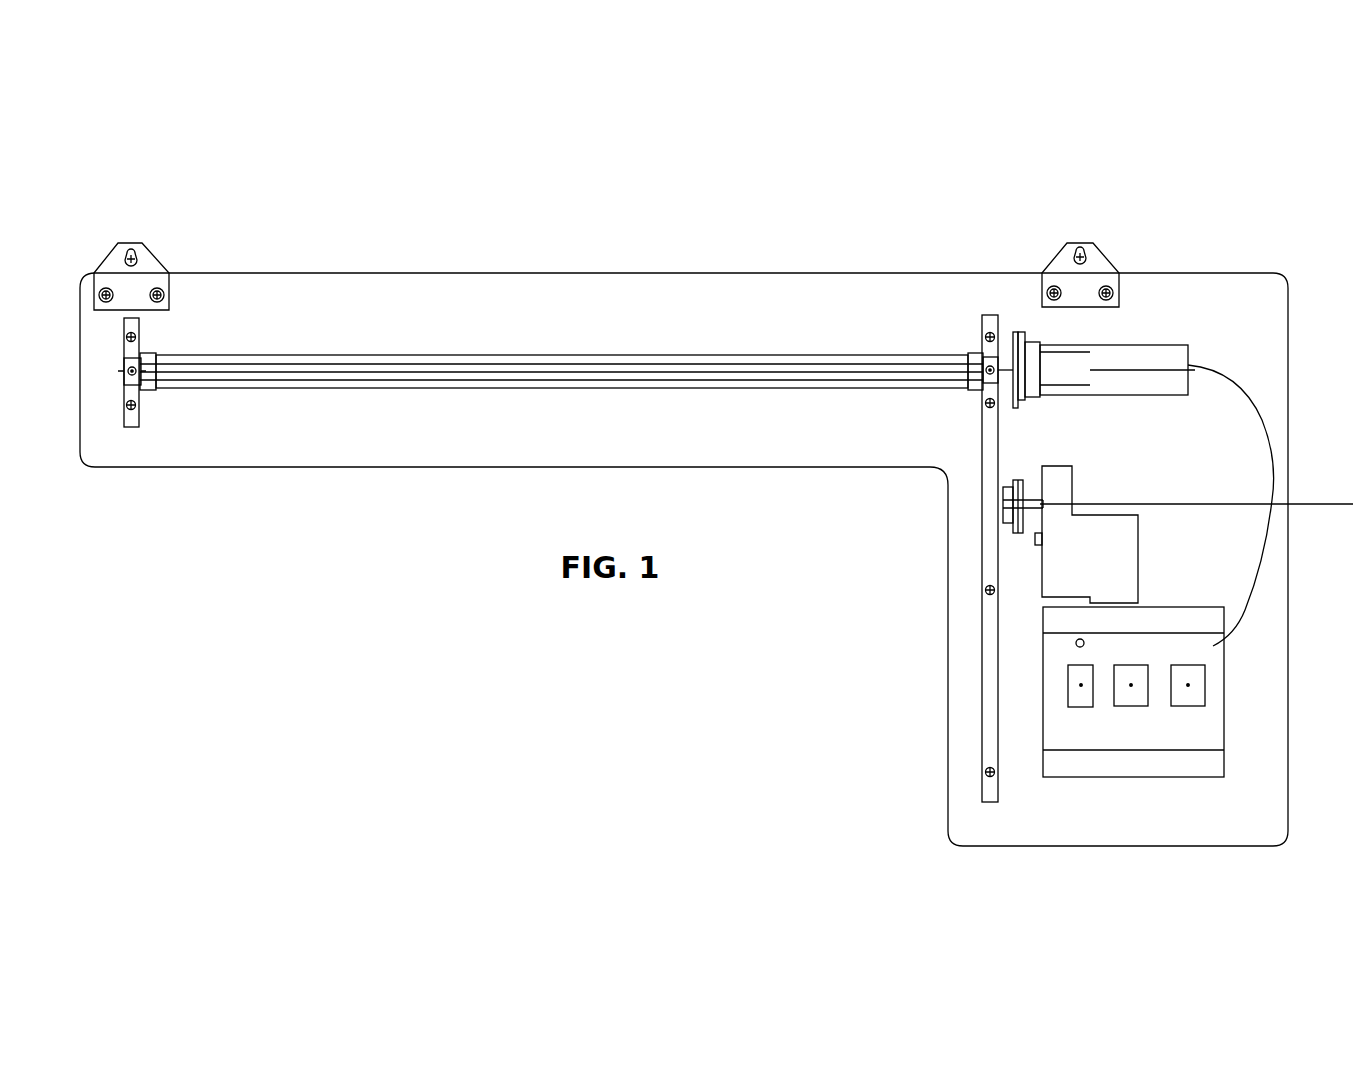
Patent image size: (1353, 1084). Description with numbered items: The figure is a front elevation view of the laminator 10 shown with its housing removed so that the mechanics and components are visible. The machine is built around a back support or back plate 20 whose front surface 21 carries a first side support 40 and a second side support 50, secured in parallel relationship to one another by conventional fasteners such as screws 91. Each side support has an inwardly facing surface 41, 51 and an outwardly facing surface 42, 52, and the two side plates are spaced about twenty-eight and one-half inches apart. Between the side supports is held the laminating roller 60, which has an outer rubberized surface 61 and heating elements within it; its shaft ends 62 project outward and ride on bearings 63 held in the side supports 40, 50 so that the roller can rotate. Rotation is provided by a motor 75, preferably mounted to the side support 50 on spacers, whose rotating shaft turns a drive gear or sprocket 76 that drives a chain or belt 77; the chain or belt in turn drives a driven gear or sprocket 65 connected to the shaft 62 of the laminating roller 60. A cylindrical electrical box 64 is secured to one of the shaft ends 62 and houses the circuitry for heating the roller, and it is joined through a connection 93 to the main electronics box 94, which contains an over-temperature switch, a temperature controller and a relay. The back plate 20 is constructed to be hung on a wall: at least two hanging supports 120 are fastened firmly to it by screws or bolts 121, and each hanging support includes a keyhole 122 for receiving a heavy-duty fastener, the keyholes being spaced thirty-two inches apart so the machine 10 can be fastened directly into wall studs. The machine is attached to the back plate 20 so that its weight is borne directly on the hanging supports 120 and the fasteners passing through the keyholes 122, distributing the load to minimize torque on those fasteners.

The laminator 10 is at (1172, 211).
The back support 20 is at (1220, 830).
The front surface 21 is at (1273, 793).
The first side support 40 is at (507, 596).
The inwardly facing surface 41 is at (144, 419).
The outwardly facing surface 42 is at (109, 413).
The second side support 50 is at (987, 712).
The inwardly facing surface 51 is at (980, 760).
The outwardly facing surface 52 is at (1002, 785).
The laminating roller 60 is at (562, 302).
The outer rubberized surface 61 is at (691, 361).
The shaft ends 62 is at (152, 356).
The bearings 63 is at (121, 380).
The cylindrical electrical box 64 is at (1167, 352).
The driven gear/sprocket 65 is at (1031, 405).
The motor 75 is at (1135, 570).
The drive gear/sprocket 76 is at (1012, 462).
The chain or belt 77 is at (1015, 538).
The screws 91 is at (121, 341).
The connection 93 is at (1269, 544).
The main electronics box 94 is at (1218, 653).
The hanging supports 120 is at (159, 253).
The screws or bolts 121 is at (1121, 279).
The keyhole 122 is at (1062, 243).